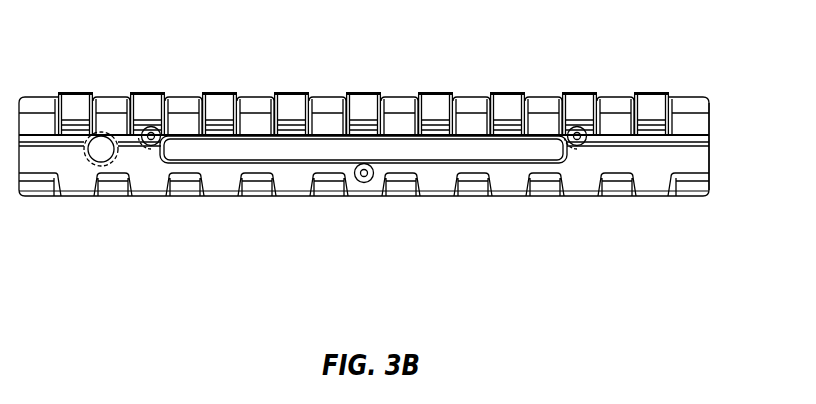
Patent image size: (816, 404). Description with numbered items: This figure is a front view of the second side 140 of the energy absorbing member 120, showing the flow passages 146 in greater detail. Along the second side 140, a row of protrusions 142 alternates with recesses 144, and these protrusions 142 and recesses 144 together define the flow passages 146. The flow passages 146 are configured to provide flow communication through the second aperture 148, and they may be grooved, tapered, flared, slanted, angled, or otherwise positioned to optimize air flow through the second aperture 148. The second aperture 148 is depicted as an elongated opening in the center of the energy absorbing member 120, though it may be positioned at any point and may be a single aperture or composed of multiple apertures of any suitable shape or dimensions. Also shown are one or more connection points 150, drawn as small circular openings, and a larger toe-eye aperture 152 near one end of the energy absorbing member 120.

The energy absorbing member 120 is at (680, 274).
The second side 140 is at (715, 153).
The protrusions 142 is at (77, 93).
The recesses 144 is at (104, 87).
The flow passages 146 is at (113, 105).
The second aperture 148 is at (227, 150).
The connection points 150 is at (160, 126).
The toe-eye aperture 152 is at (102, 150).